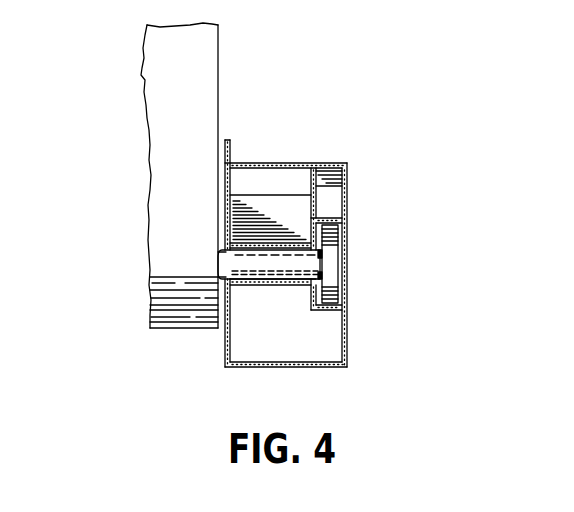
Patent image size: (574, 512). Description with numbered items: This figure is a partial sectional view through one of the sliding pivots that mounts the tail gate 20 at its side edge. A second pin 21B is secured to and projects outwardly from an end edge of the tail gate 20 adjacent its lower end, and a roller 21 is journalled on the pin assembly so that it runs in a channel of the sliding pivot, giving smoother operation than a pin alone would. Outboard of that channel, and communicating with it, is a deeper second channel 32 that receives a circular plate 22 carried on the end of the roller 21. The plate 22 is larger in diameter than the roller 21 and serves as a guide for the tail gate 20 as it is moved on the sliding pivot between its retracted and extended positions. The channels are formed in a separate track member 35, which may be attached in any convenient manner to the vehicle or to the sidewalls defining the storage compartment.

The tail gate 20 is at (140, 105).
The roller 21 is at (273, 268).
The second pin 21B is at (237, 256).
The circular plate 22 is at (333, 262).
The second channel 32 is at (330, 216).
The track member 35 is at (277, 163).